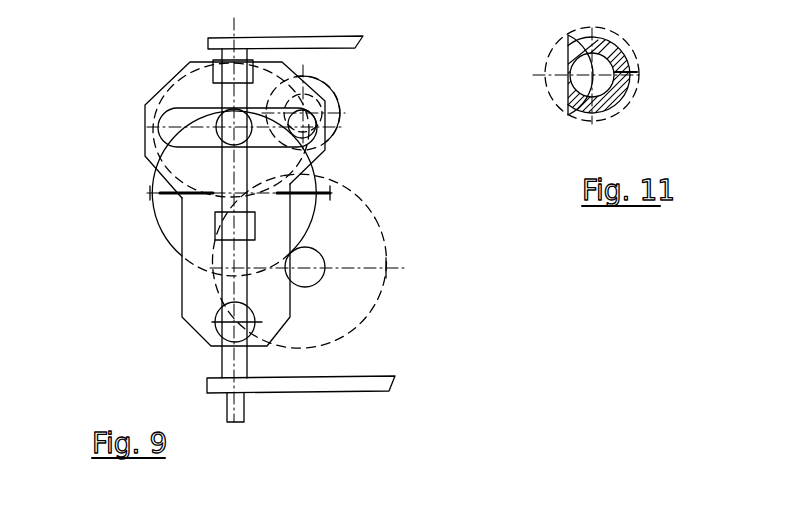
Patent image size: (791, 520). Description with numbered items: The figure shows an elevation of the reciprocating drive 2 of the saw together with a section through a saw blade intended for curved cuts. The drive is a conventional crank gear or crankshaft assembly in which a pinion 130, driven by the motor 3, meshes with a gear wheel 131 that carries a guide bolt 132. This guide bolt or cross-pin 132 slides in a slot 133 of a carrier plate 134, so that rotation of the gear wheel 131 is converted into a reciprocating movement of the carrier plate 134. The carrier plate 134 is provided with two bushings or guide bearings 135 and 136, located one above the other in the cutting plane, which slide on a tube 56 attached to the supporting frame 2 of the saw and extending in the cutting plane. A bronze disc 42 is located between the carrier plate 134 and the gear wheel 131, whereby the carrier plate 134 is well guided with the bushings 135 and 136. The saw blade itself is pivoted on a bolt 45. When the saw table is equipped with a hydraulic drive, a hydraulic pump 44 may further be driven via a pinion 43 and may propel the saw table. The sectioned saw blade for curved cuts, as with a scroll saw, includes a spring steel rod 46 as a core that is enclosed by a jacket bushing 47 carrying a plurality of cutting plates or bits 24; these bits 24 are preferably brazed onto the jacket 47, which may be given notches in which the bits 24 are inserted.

In FIG. 9, the reciprocating drive 2 is at (182, 306).
In FIG. 9, the motor 3 is at (380, 298).
In FIG. 11, the cutting plates or bits 24 is at (547, 105).
In FIG. 9, the bronze disc 42 is at (350, 182).
In FIG. 9, the pinion 43 is at (315, 115).
In FIG. 9, the hydraulic pump 44 is at (337, 93).
In FIG. 9, the bolt 45 is at (218, 332).
In FIG. 11, the spring steel rod 46 is at (598, 68).
In FIG. 11, the jacket bushing 47 is at (615, 93).
In FIG. 9, the tube 56 is at (230, 176).
In FIG. 9, the pinion 130 is at (325, 283).
In FIG. 9, the gear wheel 131 is at (152, 208).
In FIG. 9, the guide bolt 132 is at (230, 133).
In FIG. 9, the slot 133 is at (175, 122).
In FIG. 9, the carrier plate 134 is at (177, 92).
In FIG. 9, the bushing 135 is at (235, 218).
In FIG. 9, the bushing 136 is at (226, 74).